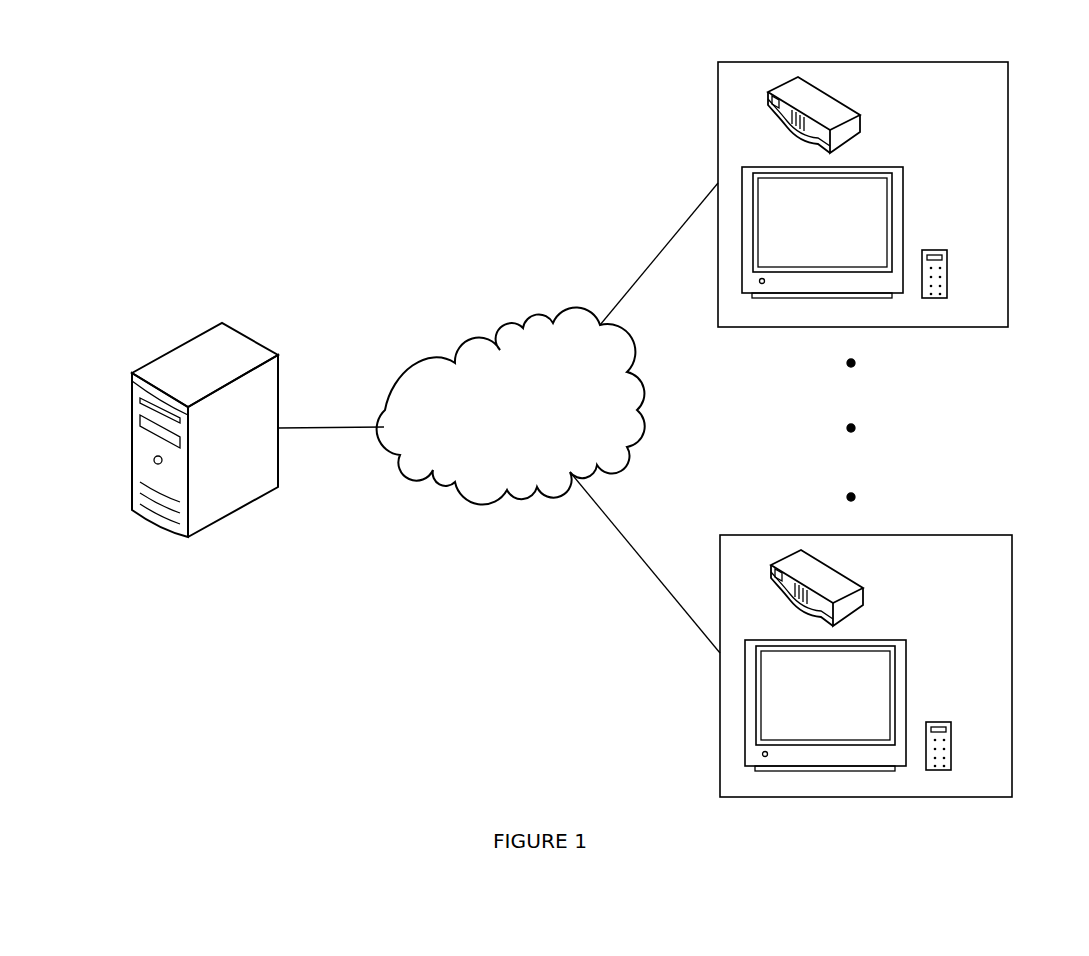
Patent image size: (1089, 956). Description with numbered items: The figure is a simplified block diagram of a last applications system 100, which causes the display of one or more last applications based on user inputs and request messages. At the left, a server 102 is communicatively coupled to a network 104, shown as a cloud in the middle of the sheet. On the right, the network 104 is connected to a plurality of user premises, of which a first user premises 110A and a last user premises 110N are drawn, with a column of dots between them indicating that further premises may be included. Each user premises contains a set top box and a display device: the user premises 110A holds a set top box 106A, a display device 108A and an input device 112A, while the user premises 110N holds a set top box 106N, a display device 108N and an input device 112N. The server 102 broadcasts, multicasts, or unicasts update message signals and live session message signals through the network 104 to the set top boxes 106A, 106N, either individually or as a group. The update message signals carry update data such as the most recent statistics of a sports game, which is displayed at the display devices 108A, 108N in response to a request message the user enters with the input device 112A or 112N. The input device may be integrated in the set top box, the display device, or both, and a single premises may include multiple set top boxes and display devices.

The last applications system 100 is at (525, 74).
The server 102 is at (287, 368).
The network 104 is at (497, 424).
The set top box 106A is at (868, 122).
The display device 108A is at (910, 210).
The user premises 110A is at (1027, 98).
The input device 112A is at (952, 270).
The set top box 106N is at (872, 595).
The display device 108N is at (912, 683).
The user premises 110N is at (1027, 572).
The input device 112N is at (955, 745).